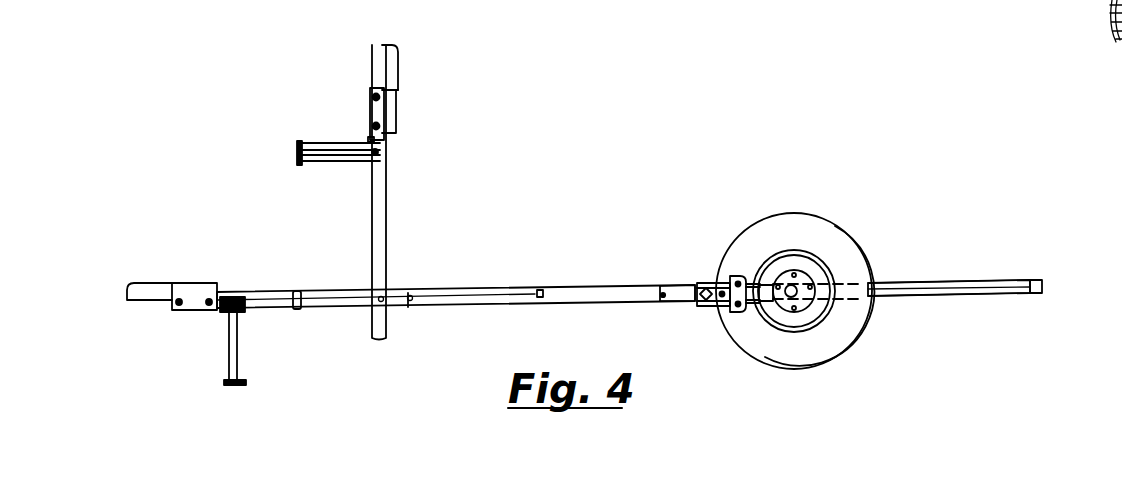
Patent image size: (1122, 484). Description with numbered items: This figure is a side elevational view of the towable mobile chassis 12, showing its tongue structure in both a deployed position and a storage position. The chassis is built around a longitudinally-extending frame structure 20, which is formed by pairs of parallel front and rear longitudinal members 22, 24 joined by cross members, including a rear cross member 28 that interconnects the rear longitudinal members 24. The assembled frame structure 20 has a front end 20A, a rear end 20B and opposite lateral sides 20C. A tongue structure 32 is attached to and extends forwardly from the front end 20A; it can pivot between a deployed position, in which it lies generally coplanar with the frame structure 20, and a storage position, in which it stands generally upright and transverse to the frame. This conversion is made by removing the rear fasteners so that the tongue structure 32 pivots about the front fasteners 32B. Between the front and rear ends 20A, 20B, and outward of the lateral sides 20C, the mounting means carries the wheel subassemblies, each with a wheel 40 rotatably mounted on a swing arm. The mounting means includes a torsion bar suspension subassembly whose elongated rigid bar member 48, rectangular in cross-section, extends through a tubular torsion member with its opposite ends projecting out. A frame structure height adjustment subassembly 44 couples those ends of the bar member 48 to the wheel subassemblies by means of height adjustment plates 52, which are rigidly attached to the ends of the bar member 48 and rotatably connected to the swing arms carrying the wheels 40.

The towable mobile chassis 12 is at (928, 257).
The frame structure 20 is at (579, 286).
The front end 20A is at (410, 289).
The rear end 20B is at (1042, 282).
The lateral sides 20C is at (626, 297).
The front longitudinal members 22 is at (530, 297).
The rear longitudinal members 24 is at (940, 294).
The rear cross member 28 is at (1045, 290).
The tongue structure 32 is at (368, 207).
The front fasteners 32B is at (379, 305).
The wheel 40 is at (845, 335).
The frame structure height adjustment subassembly 44 is at (712, 276).
The rigid bar member 48 is at (700, 287).
The height adjustment plates 52 is at (727, 311).